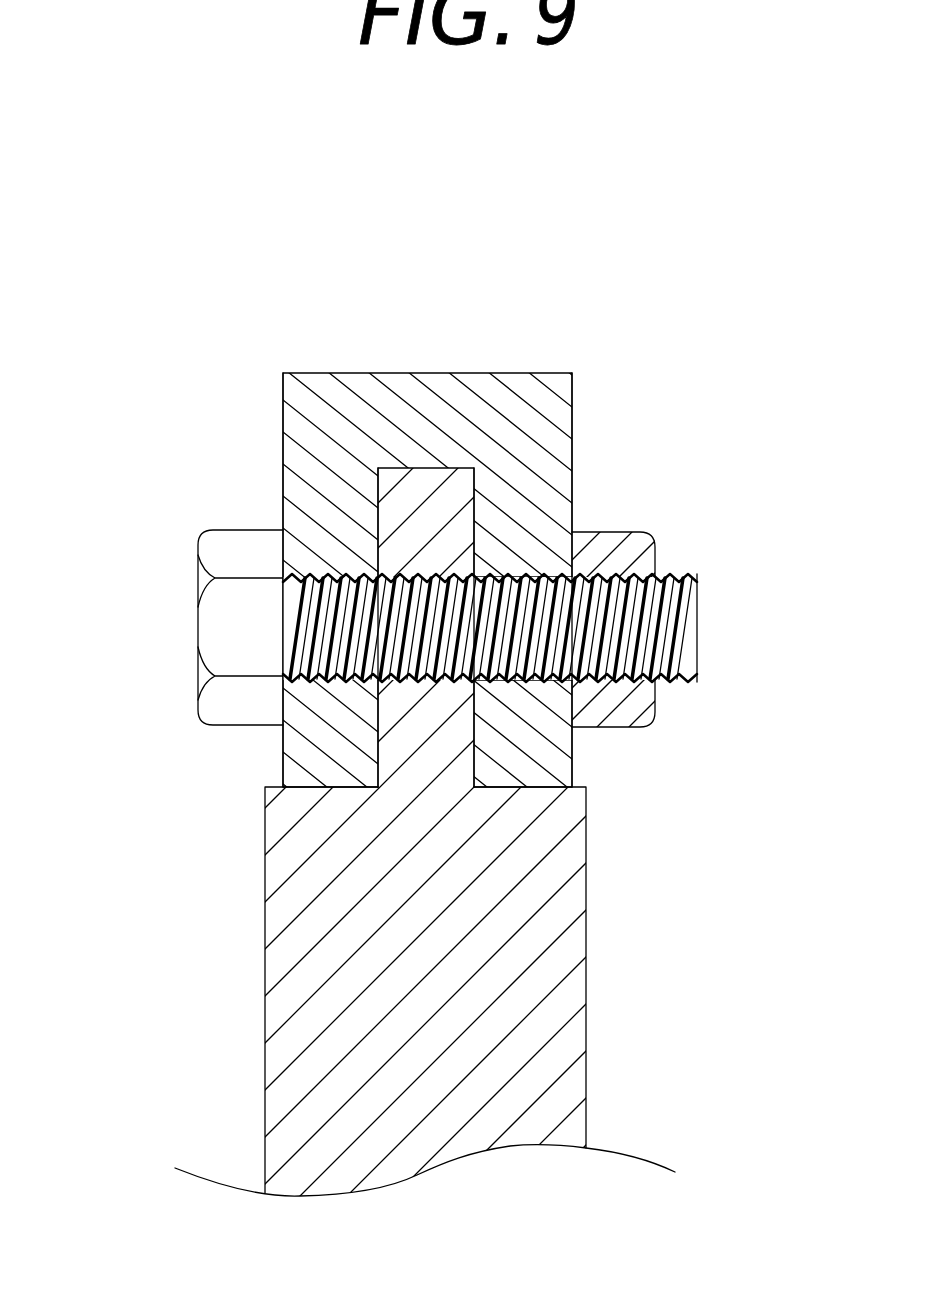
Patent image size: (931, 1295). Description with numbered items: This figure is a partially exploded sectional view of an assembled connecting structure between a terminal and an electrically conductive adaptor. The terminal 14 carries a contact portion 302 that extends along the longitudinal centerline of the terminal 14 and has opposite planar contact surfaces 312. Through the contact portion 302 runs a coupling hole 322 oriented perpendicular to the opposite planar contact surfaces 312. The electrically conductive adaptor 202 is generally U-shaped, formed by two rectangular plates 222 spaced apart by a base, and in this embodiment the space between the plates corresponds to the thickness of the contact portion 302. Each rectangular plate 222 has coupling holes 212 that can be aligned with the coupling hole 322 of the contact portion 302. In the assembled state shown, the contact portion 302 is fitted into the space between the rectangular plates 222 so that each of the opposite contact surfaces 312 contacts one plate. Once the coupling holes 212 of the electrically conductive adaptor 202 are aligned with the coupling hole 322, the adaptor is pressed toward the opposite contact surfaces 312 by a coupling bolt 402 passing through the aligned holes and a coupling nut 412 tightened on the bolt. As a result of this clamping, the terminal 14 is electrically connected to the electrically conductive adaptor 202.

The terminal 14 is at (530, 973).
The electrically conductive adaptor 202 is at (313, 434).
The coupling holes 212 is at (540, 572).
The rectangular plates 222 is at (474, 753).
The contact portion 302 is at (432, 467).
The planar contact surfaces 312 is at (373, 523).
The coupling hole 322 is at (420, 643).
The coupling bolt 402 is at (242, 632).
The coupling nut 412 is at (628, 553).